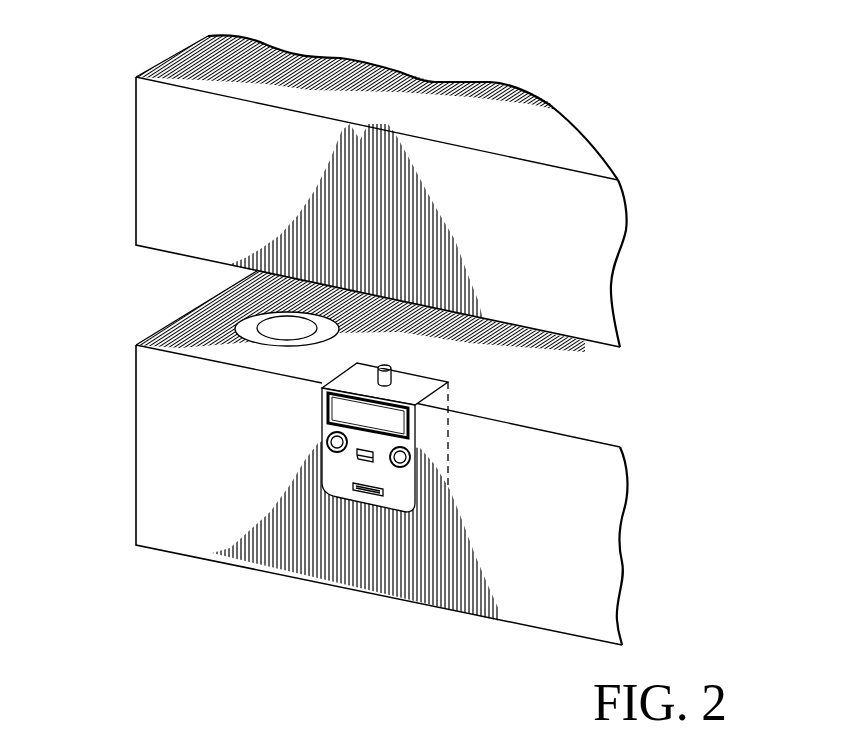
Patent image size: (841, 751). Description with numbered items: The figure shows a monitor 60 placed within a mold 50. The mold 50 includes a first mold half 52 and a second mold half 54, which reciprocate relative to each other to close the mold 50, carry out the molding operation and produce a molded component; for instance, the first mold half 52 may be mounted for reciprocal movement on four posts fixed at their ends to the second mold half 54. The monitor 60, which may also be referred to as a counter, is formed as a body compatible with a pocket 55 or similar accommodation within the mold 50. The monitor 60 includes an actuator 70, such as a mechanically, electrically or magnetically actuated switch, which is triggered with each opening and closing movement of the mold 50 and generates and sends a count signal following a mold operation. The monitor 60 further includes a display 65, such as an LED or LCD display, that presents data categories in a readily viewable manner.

The mold 50 is at (393, 347).
The first mold half 52 is at (157, 495).
The second mold half 54 is at (155, 193).
The pocket 55 is at (442, 492).
The monitor 60 is at (342, 483).
The display 65 is at (388, 425).
The actuator 70 is at (395, 366).